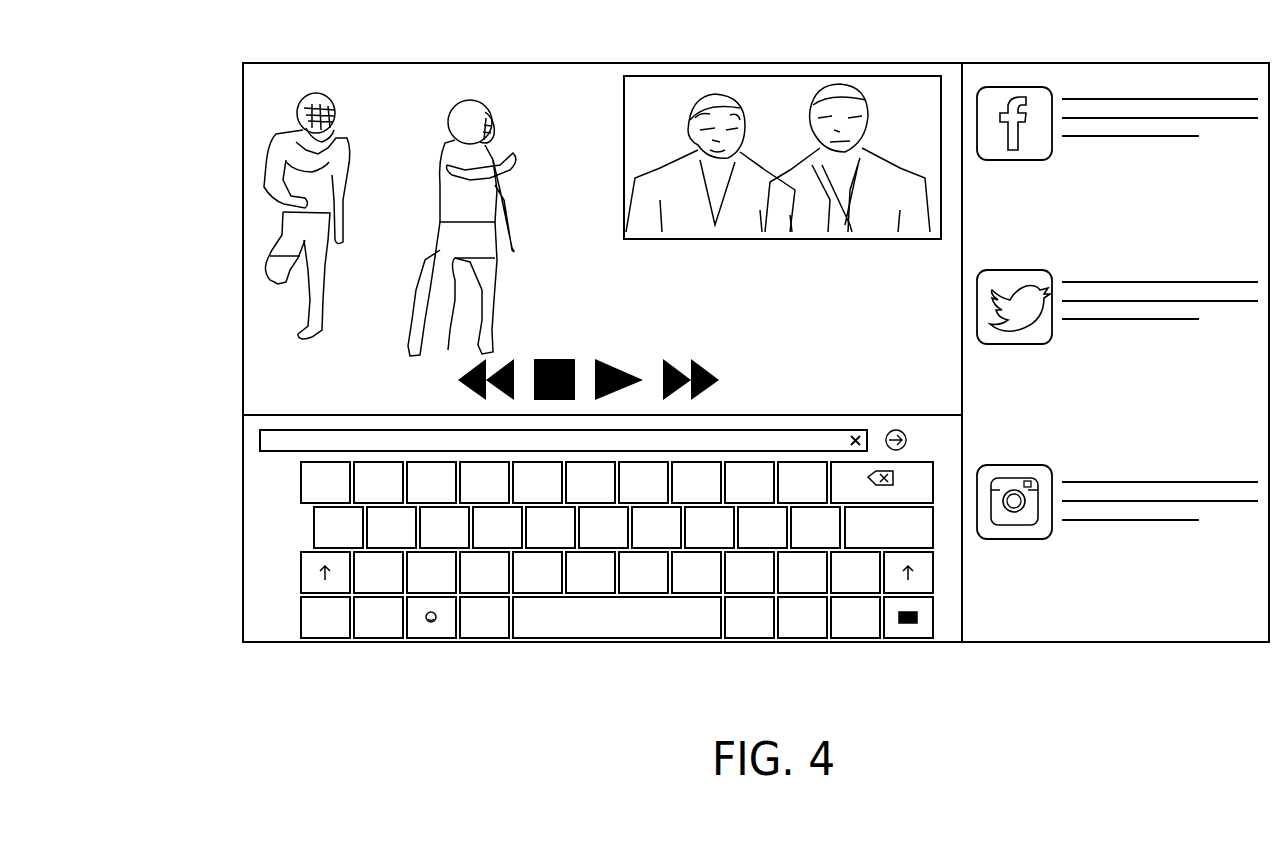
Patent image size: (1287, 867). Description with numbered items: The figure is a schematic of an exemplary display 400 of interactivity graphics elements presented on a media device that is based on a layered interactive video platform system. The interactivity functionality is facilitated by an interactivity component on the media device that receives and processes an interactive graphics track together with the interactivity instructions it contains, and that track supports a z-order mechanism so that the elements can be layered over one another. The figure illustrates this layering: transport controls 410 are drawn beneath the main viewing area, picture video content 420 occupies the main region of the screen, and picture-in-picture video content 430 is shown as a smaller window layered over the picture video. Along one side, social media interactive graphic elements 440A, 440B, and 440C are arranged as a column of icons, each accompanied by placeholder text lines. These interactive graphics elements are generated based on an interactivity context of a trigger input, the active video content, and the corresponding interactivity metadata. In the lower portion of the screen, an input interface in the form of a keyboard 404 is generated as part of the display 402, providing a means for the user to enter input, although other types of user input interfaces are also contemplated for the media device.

The display 400 is at (176, 270).
The display 402 is at (243, 180).
The keyboard 404 is at (243, 526).
The transport controls 410 is at (728, 383).
The picture video content 420 is at (948, 392).
The picture-in-picture video content 430 is at (941, 215).
The social media interactive graphic element 440A is at (1062, 162).
The social media interactive graphic element 440B is at (1057, 337).
The social media interactive graphic element 440C is at (1065, 537).